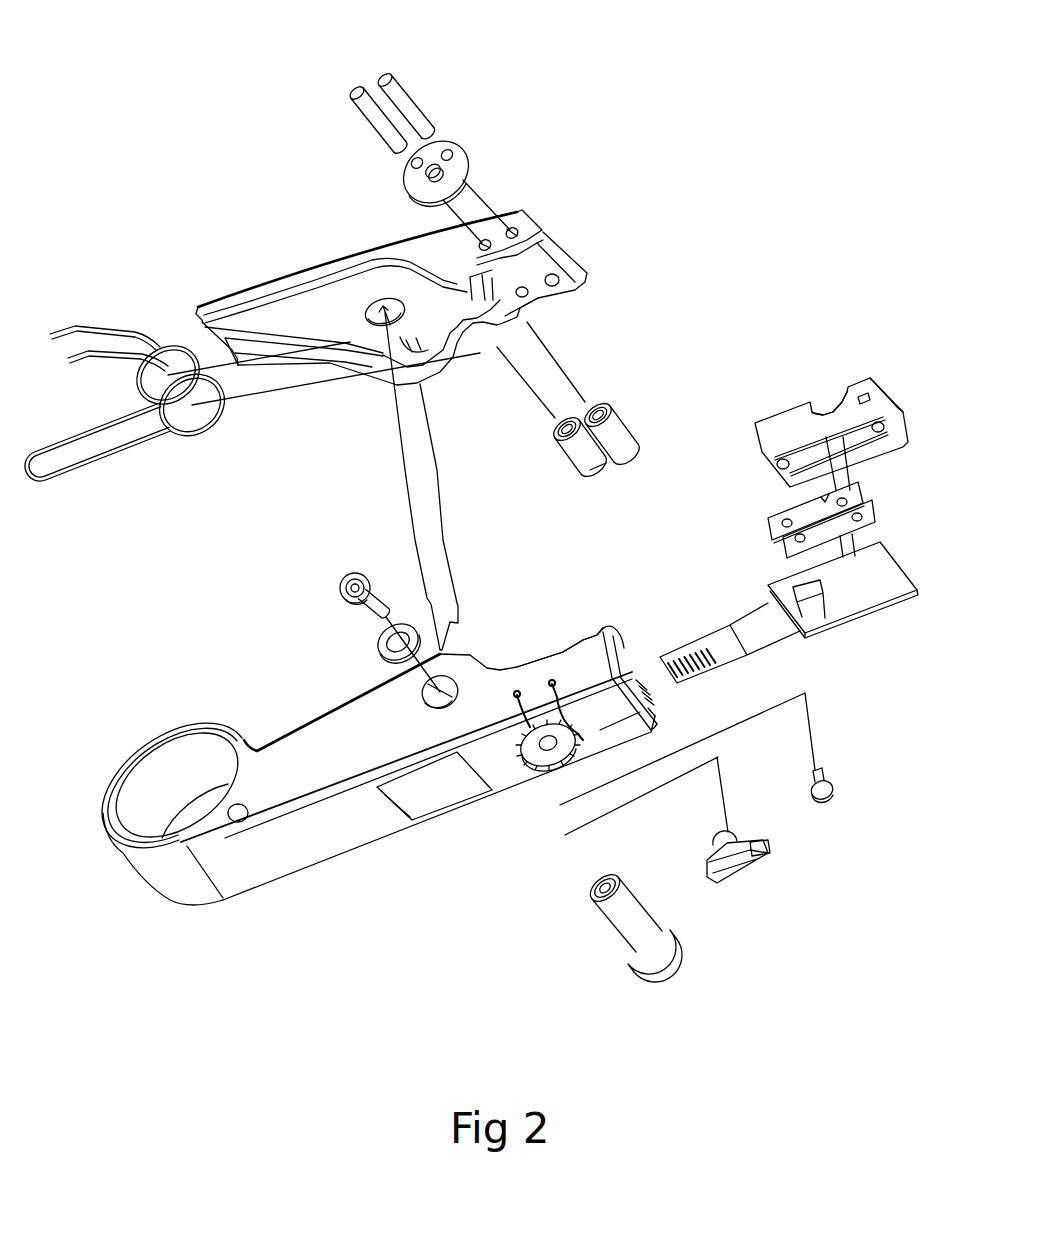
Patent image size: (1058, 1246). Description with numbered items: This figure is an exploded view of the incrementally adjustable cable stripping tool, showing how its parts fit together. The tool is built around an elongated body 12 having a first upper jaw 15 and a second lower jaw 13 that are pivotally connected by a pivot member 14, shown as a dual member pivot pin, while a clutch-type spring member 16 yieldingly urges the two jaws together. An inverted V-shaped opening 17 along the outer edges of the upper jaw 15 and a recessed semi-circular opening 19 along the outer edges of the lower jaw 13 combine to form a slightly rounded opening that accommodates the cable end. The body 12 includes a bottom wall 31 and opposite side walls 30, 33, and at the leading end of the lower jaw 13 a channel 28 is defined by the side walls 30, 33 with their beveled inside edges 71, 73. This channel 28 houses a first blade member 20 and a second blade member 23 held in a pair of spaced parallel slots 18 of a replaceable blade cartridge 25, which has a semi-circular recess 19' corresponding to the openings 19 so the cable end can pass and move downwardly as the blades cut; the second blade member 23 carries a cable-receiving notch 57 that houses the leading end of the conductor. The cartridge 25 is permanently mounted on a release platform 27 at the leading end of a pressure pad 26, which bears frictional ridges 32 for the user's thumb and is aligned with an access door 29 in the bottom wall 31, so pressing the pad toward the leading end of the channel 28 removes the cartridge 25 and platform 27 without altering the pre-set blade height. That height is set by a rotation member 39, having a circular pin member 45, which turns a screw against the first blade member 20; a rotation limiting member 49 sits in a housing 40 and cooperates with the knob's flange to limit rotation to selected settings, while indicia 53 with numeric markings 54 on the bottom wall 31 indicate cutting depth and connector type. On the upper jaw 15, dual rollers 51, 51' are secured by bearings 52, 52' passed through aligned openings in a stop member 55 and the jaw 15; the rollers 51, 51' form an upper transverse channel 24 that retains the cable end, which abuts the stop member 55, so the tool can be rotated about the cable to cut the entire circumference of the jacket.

The elongated body 12 is at (285, 862).
The second lower jaw 13 is at (600, 647).
The pivot member 14 is at (610, 928).
The first upper jaw 15 is at (362, 248).
The spring member 16 is at (75, 482).
The opening 17 is at (540, 297).
The slots 18 is at (838, 432).
The opening 19 is at (545, 646).
The semi-circular recess 19' is at (782, 371).
The first blade member 20 is at (768, 533).
The second blade member 23 is at (787, 553).
The upper transverse channel 24 is at (608, 463).
The blade cartridge 25 is at (860, 380).
The pressure pad 26 is at (728, 647).
The release platform 27 is at (880, 608).
The channel 28 is at (650, 695).
The access door 29 is at (430, 788).
The side wall 30 is at (653, 713).
The bottom wall 31 is at (627, 730).
The ridges 32 is at (710, 658).
The side wall 33 is at (597, 640).
The rotation member 39 is at (767, 852).
The housing 40 is at (557, 725).
The pin member 45 is at (717, 843).
The rotation limiting member 49 is at (833, 790).
The roller 51 is at (547, 461).
The roller 51' is at (644, 413).
The bearing 52 is at (316, 78).
The bearing 52' is at (478, 81).
The indicia 53 is at (532, 767).
The numeric markings 54 is at (550, 747).
The stop member 55 is at (467, 157).
The cable-receiving notch 57 is at (823, 496).
The beveled inside edge 71 is at (653, 720).
The beveled inside edge 73 is at (620, 630).